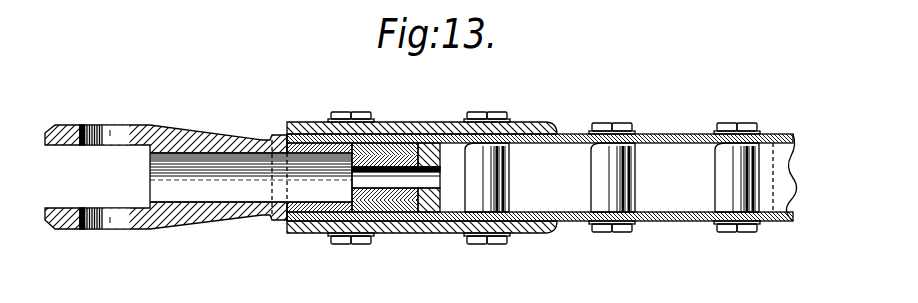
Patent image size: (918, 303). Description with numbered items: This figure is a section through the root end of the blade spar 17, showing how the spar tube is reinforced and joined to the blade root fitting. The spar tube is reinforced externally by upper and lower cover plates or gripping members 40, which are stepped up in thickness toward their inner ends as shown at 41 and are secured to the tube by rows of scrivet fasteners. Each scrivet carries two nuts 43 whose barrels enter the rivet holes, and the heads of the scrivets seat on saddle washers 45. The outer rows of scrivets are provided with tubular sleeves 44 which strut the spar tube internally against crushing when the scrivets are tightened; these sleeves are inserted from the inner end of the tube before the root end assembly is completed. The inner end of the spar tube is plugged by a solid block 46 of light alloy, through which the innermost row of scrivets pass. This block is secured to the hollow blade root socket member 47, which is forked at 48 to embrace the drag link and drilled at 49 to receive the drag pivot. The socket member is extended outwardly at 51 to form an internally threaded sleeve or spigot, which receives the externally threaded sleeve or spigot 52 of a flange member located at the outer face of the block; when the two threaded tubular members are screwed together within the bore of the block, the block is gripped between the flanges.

The blade spar 17 is at (786, 133).
The cover plates or gripping members 40 is at (677, 133).
The stepped-up portion of cover plates 41 is at (437, 222).
The nuts 43 is at (362, 112).
The tubular sleeves 44 is at (600, 178).
The saddle washers 45 is at (467, 114).
The solid block 46 is at (304, 149).
The blade root socket member 47 is at (188, 134).
The fork of socket member 48 is at (70, 139).
The drag pivot hole 49 is at (120, 137).
The internally threaded sleeve or spigot 51 is at (320, 205).
The externally threaded sleeve or spigot 52 is at (404, 190).